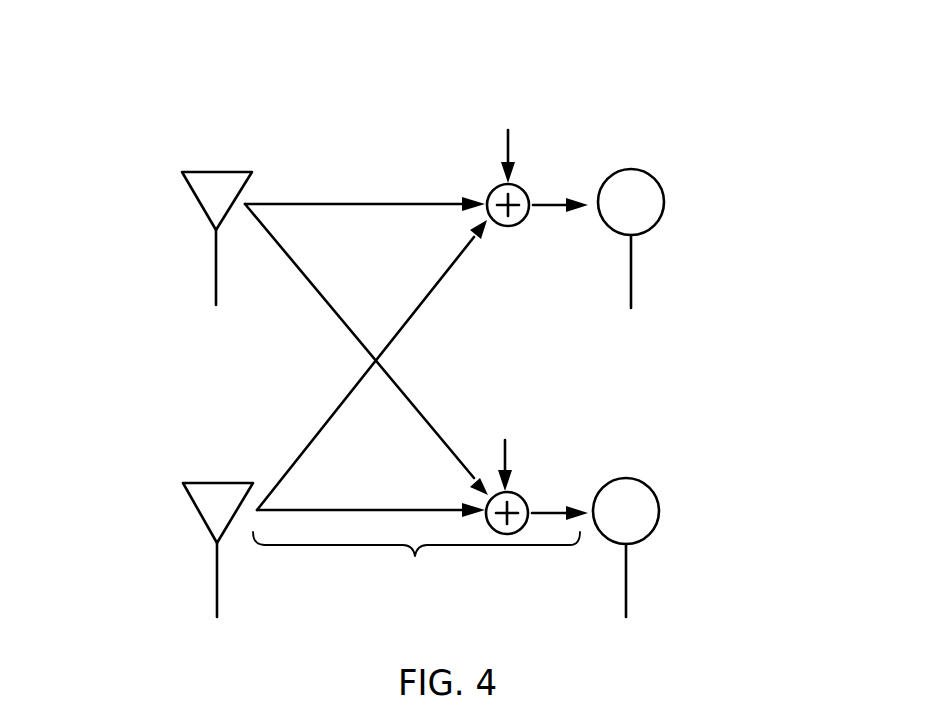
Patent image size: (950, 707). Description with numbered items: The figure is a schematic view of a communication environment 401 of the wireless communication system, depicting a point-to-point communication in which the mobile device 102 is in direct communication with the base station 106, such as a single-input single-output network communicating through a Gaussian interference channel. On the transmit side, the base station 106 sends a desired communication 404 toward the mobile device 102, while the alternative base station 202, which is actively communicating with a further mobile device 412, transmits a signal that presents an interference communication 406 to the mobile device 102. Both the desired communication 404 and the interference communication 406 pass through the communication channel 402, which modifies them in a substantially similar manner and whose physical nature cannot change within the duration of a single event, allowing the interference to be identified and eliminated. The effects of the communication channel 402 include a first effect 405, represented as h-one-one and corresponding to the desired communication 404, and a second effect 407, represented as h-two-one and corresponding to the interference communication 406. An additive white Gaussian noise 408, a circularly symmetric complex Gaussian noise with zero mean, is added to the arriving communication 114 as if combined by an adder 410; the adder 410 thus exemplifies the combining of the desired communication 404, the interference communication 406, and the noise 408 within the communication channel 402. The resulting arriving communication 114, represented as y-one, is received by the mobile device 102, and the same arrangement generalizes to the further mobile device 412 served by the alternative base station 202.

The communication environment 401 is at (137, 50).
The base station 106 is at (213, 190).
The alternative base station 202 is at (213, 503).
The desired communication 404 is at (305, 204).
The first effect 405 is at (343, 170).
The interference communication 406 is at (433, 290).
The second effect 407 is at (280, 412).
The additive white Gaussian noise 408 is at (505, 148).
The adder 410 is at (500, 223).
The arriving communication 114 is at (552, 200).
The mobile device 102 is at (630, 197).
The further mobile device 412 is at (632, 517).
The communication channel 402 is at (415, 556).